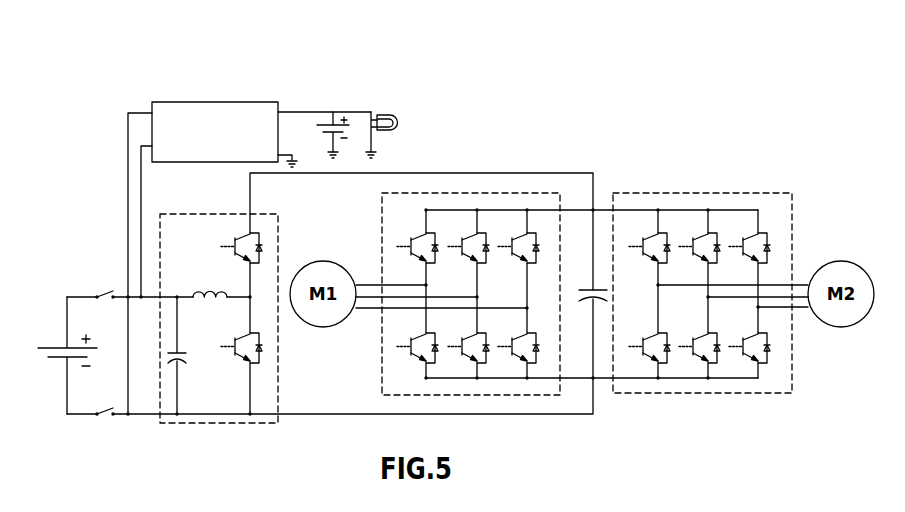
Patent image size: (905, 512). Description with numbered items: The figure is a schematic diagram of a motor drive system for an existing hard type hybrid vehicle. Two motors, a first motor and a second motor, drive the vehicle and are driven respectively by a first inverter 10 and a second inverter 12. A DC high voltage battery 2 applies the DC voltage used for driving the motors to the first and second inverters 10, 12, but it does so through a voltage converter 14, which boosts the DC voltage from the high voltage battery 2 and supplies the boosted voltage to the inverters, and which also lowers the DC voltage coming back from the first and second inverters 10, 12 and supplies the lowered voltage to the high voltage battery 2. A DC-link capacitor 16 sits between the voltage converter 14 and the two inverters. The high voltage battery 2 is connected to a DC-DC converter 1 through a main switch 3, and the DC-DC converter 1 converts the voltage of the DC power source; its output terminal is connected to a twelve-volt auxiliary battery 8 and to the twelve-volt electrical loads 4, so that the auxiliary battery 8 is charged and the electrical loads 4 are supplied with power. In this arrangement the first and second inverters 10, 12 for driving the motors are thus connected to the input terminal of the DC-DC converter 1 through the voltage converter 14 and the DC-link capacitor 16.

The DC-DC converter 1 is at (261, 134).
The high voltage battery 2 is at (50, 333).
The main switch 3 is at (101, 284).
The electrical loads 4 is at (400, 113).
The 12 V auxiliary battery 8 is at (346, 108).
The first inverter 10 is at (485, 187).
The second inverter 12 is at (685, 187).
The voltage converter 14 is at (195, 208).
The DC-link capacitor 16 is at (603, 273).